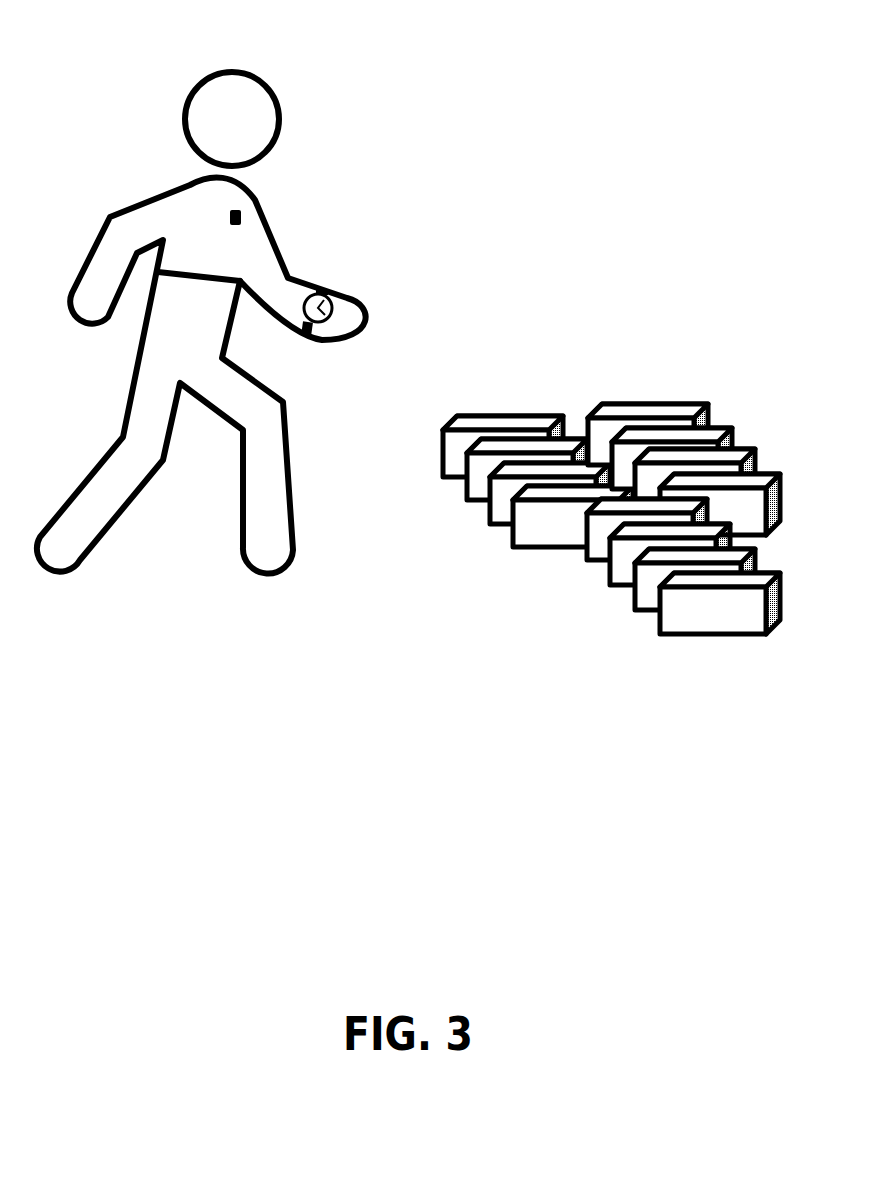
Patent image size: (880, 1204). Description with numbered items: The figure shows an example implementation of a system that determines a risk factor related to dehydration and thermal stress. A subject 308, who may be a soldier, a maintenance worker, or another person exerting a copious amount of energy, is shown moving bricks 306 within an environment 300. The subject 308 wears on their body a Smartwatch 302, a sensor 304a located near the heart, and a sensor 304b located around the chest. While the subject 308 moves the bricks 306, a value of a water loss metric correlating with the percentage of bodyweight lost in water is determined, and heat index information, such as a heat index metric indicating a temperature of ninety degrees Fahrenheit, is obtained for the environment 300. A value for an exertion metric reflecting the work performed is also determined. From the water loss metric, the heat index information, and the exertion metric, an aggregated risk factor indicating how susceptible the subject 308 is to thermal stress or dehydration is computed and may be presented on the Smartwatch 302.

The environment 300 is at (137, 798).
The Smartwatch 302 is at (323, 285).
The sensor 304a is at (240, 212).
The sensor 304b is at (180, 267).
The bricks 306 is at (727, 619).
The subject 308 is at (237, 72).